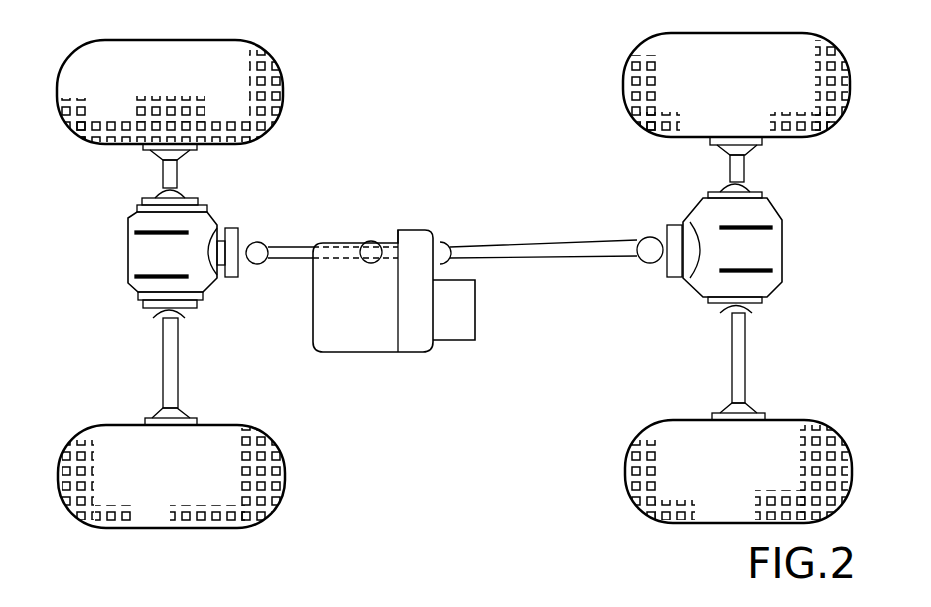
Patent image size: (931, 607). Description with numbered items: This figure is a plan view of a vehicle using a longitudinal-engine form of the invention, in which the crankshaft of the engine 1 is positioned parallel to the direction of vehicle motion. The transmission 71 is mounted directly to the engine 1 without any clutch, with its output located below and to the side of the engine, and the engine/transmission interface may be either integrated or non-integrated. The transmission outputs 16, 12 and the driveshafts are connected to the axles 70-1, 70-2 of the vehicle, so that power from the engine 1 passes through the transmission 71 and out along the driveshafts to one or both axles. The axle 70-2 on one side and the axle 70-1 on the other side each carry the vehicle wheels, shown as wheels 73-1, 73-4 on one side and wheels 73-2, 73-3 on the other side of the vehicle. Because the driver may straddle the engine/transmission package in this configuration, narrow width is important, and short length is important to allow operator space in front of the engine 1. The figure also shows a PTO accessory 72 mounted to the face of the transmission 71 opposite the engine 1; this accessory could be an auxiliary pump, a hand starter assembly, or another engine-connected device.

The engine 1 is at (345, 268).
The transmission output 12 is at (498, 245).
The transmission output 16 is at (380, 240).
The axle 70-1 is at (737, 335).
The axle 70-2 is at (187, 163).
The transmission 71 is at (415, 342).
The PTO accessory 72 is at (462, 312).
The wheel 73-1 is at (240, 58).
The wheel 73-2 is at (670, 50).
The wheel 73-3 is at (665, 422).
The wheel 73-4 is at (250, 437).